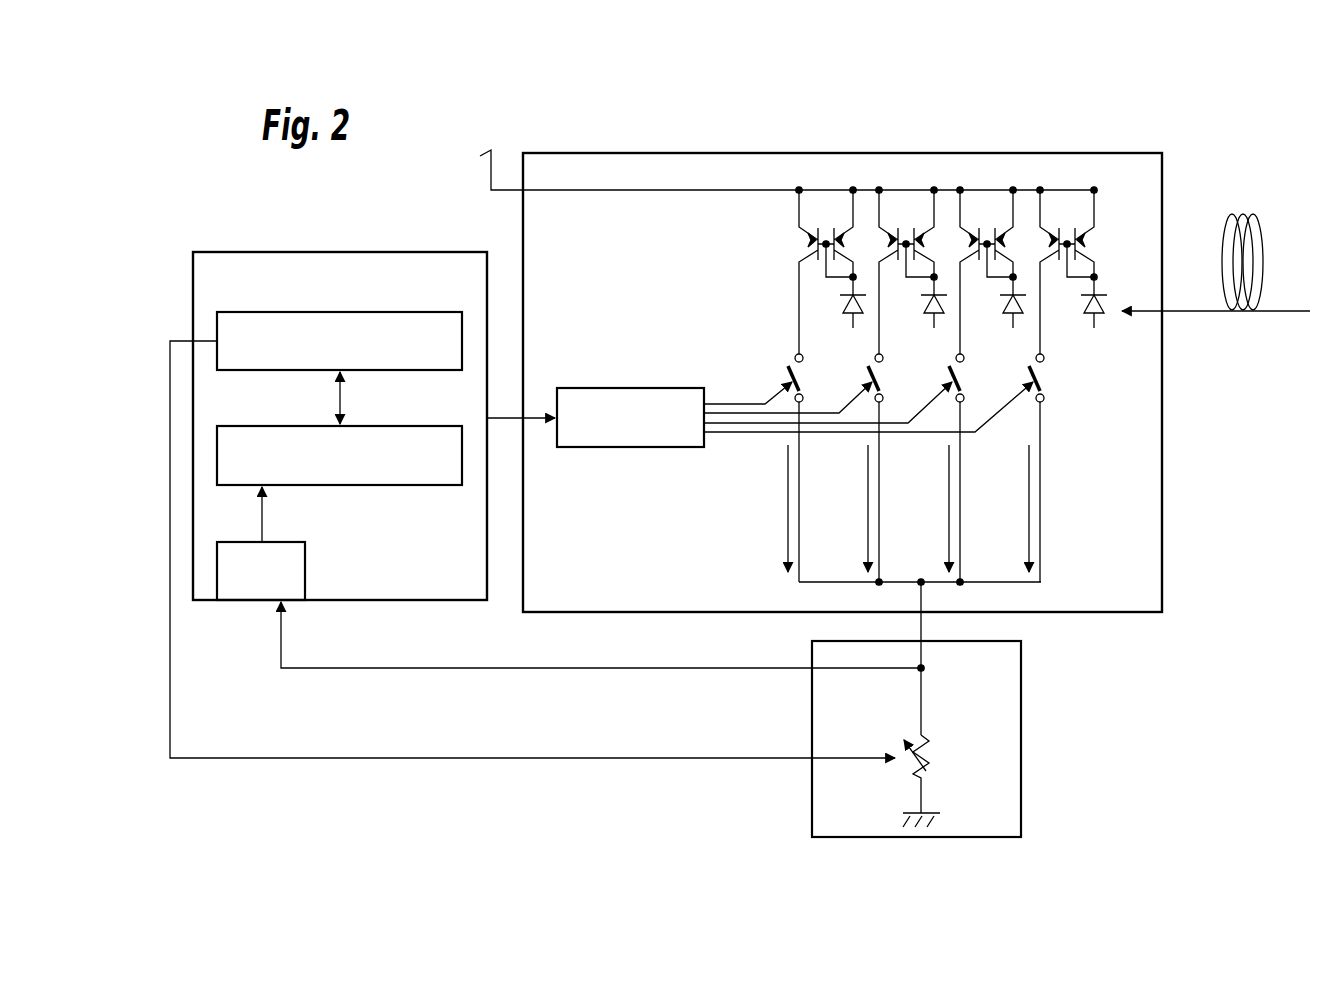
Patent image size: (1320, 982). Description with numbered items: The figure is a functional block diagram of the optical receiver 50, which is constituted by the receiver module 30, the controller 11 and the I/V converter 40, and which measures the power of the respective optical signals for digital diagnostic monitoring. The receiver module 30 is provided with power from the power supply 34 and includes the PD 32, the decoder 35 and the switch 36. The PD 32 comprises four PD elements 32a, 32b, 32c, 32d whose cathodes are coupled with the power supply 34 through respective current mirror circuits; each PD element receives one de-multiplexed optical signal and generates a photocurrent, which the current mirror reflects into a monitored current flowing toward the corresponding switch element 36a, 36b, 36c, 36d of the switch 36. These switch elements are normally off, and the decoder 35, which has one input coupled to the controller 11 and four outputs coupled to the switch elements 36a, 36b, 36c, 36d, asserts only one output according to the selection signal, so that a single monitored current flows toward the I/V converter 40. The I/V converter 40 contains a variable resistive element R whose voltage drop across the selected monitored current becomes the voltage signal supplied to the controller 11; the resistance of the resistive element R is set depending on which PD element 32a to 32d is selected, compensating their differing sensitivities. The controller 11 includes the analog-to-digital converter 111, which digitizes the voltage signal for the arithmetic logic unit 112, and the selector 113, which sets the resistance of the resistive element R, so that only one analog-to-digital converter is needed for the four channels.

The controller 11 is at (230, 252).
The analog-to-digital converter 111 is at (288, 542).
The arithmetic logic unit 112 is at (410, 426).
The selector 113 is at (410, 312).
The receiver module 30 is at (812, 152).
The PD 32 is at (969, 255).
The first PD element 32a is at (855, 293).
The second PD element 32b is at (936, 293).
The third PD element 32c is at (1015, 293).
The fourth PD element 32d is at (1096, 293).
The power supply 34 is at (784, 155).
The decoder 35 is at (598, 388).
The switch 36 is at (911, 456).
The first switch element 36a is at (801, 382).
The second switch element 36b is at (881, 382).
The third switch element 36c is at (962, 382).
The fourth switch element 36d is at (1042, 382).
The I/V converter 40 is at (625, 589).
The resistive element R is at (930, 781).
The optical receiver 50 is at (1178, 141).